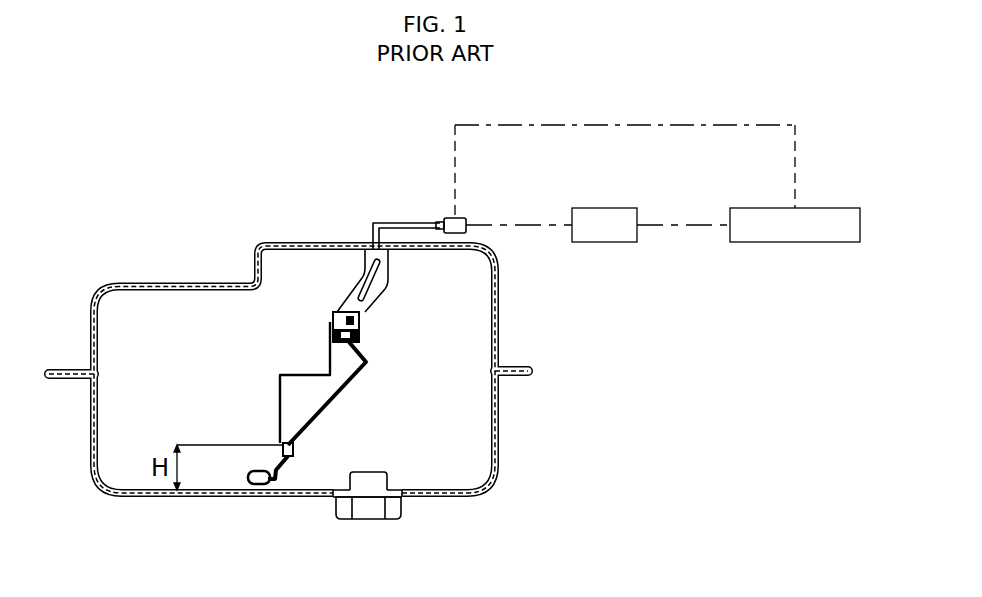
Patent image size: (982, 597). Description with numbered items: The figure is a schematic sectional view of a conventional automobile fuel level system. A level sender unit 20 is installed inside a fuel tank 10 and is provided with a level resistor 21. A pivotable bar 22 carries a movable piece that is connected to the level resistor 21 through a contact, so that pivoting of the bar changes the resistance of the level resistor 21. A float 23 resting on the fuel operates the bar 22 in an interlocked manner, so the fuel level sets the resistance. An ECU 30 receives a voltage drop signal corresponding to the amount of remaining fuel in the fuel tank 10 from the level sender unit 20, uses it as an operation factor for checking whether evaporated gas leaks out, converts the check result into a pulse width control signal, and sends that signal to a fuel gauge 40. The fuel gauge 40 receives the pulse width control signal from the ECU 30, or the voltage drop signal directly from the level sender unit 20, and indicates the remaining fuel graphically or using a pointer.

The fuel tank 10 is at (498, 420).
The level sender unit 20 is at (335, 313).
The level resistor 21 is at (359, 329).
The pivotable bar 22 is at (337, 393).
The float 23 is at (258, 484).
The ECU 30 is at (603, 243).
The fuel gauge 40 is at (795, 243).